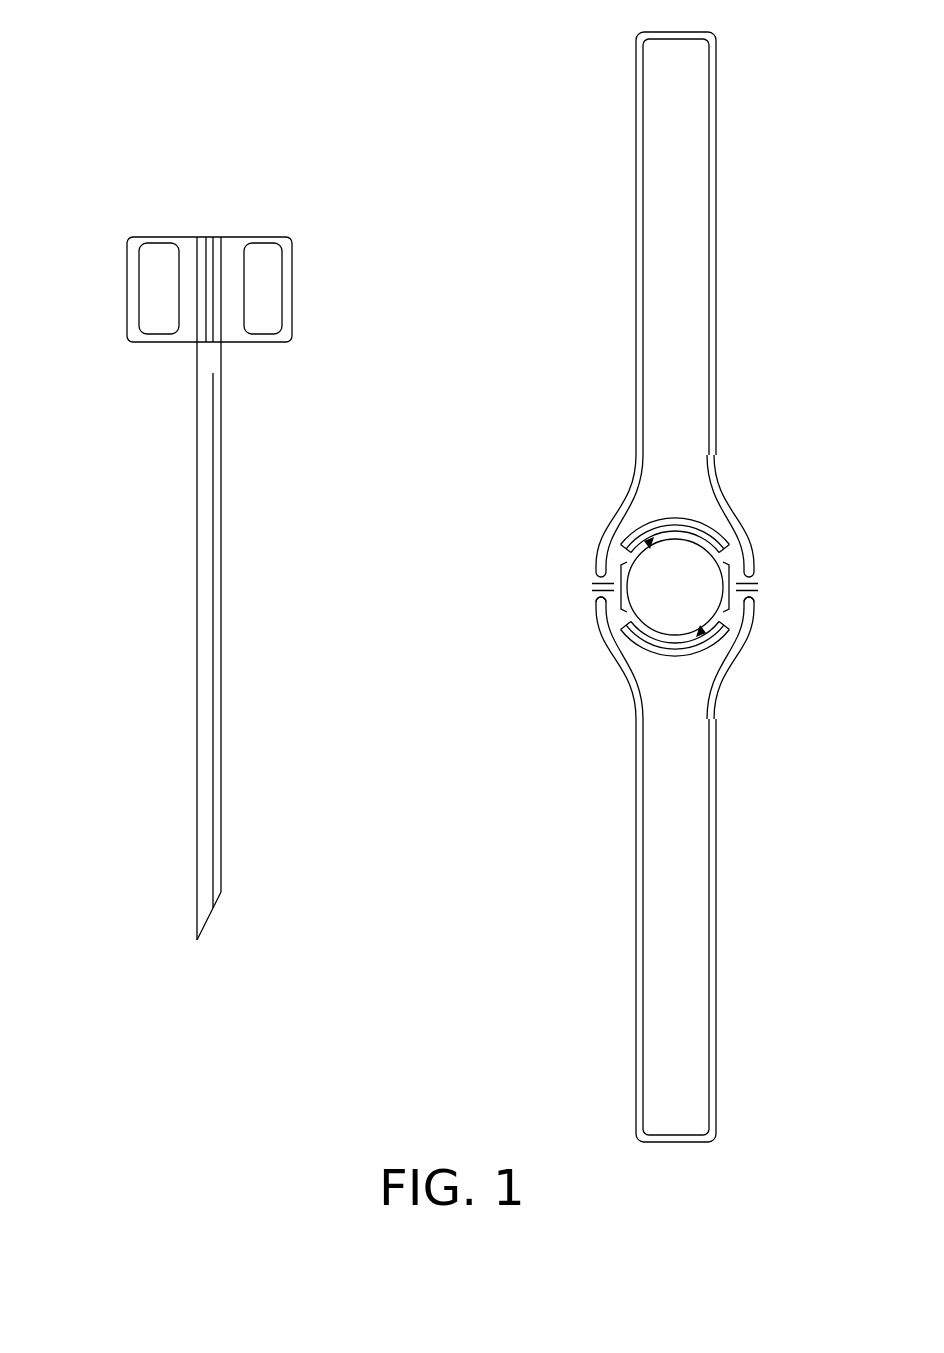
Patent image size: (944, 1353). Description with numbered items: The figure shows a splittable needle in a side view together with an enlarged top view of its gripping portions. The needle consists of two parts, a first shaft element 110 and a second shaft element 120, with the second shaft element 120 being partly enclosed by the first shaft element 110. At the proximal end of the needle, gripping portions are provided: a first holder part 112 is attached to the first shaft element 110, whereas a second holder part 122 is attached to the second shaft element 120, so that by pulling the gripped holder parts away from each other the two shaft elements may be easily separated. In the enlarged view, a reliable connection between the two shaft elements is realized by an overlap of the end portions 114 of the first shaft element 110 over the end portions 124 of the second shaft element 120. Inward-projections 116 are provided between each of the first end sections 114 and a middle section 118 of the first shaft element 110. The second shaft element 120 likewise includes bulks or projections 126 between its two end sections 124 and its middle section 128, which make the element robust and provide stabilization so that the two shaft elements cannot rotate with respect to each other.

The first shaft element 110 is at (205, 590).
The first holder part 112 is at (153, 290).
The end portions of the first shaft element 114 is at (614, 592).
The inward-projections 116 is at (637, 551).
The middle section of the first shaft element 118 is at (688, 537).
The second shaft element 120 is at (218, 566).
The second holder part 122 is at (273, 291).
The end portions of the second shaft element 124 is at (612, 602).
The bulks or projections 126 is at (622, 626).
The middle section of the second shaft element 128 is at (659, 643).